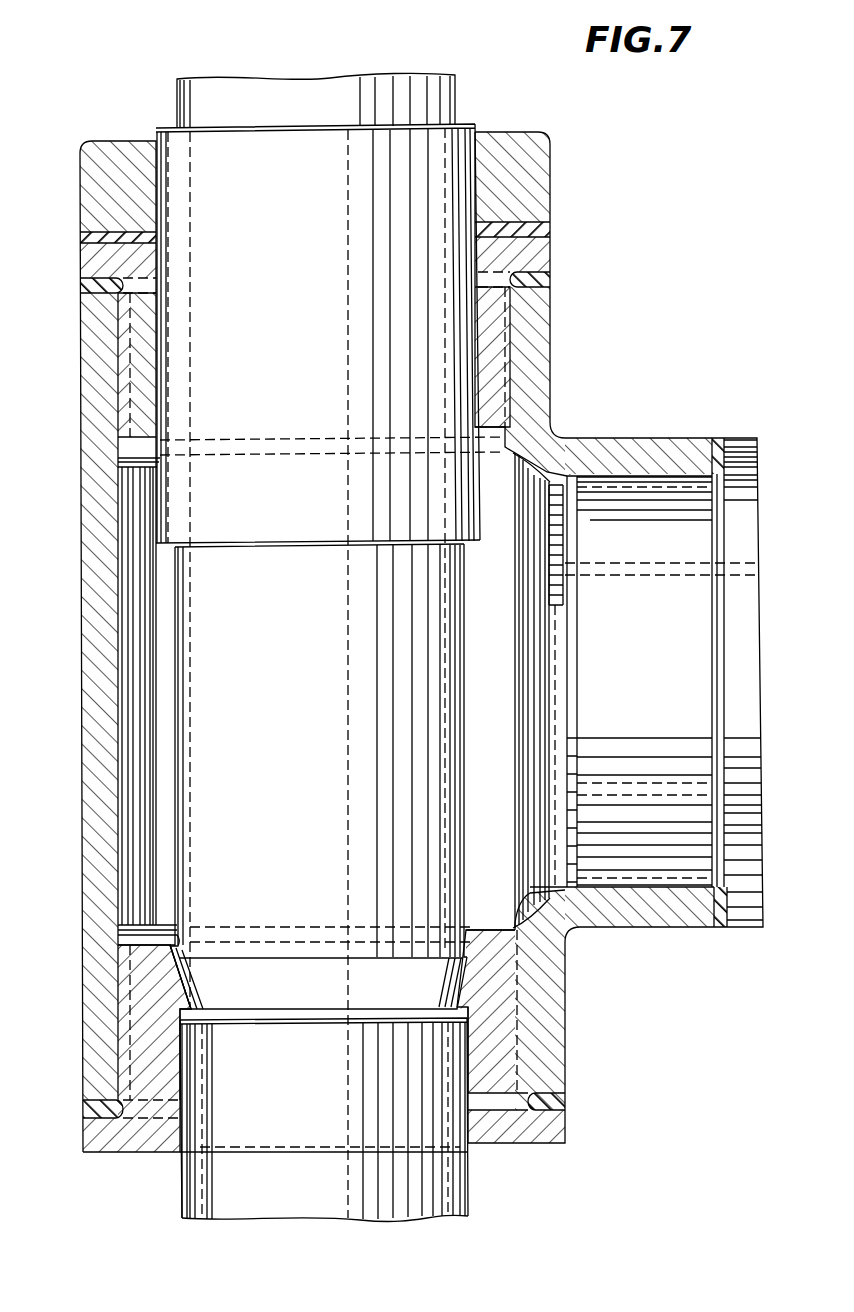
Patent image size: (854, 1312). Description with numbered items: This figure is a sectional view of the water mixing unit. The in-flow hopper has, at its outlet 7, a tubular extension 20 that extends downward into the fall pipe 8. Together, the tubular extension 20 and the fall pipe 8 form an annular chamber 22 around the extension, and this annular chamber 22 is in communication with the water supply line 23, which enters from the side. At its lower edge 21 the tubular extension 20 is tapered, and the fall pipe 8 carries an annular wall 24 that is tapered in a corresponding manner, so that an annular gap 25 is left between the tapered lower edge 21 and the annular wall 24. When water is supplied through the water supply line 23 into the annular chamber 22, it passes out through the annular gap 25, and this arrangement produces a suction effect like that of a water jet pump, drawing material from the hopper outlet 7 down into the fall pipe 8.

The outlet 7 is at (448, 101).
The fall pipe 8 is at (90, 825).
The tubular extension 20 is at (462, 718).
The lower edge 21 is at (460, 975).
The annular chamber 22 is at (135, 690).
The water supply line 23 is at (658, 500).
The annular wall 24 is at (472, 945).
The annular gap 25 is at (178, 946).